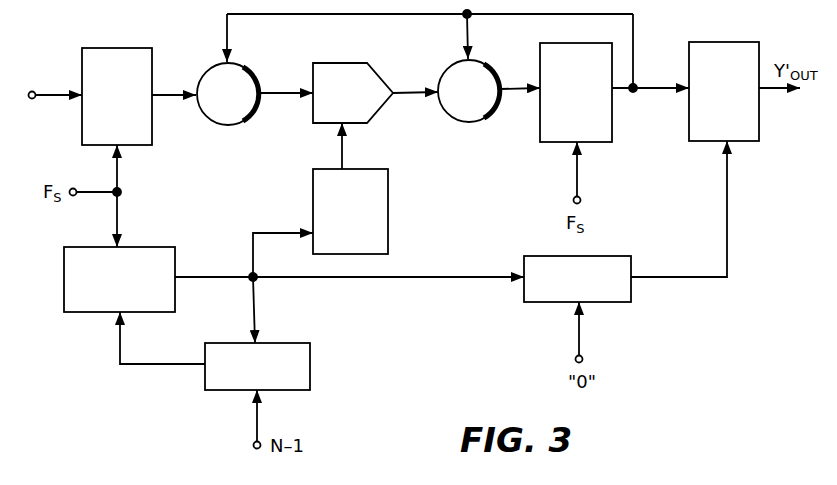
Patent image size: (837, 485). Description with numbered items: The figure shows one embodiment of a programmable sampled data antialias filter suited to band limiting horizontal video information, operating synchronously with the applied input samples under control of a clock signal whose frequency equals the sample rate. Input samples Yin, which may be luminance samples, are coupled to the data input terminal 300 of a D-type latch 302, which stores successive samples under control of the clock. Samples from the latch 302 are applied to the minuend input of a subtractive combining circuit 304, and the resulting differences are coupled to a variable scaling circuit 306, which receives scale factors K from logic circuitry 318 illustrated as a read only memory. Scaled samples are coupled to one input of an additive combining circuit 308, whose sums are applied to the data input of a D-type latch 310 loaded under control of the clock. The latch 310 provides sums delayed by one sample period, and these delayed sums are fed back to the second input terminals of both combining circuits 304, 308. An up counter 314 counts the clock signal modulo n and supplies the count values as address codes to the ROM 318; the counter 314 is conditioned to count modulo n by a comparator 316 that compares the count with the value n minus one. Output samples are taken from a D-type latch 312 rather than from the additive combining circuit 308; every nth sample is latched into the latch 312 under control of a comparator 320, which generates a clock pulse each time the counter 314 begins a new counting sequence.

The data input terminal 300 is at (51, 99).
The D-type latch 302 is at (140, 48).
The subtractive combining circuit 304 is at (248, 77).
The variable scaling circuit 306 is at (373, 74).
The additive combining circuit 308 is at (479, 122).
The D-type latch 310 is at (612, 110).
The D-type latch 312 is at (689, 141).
The up counter 314 is at (178, 240).
The comparator 316 is at (272, 343).
The logic circuitry 318 is at (388, 200).
The comparator 320 is at (545, 256).